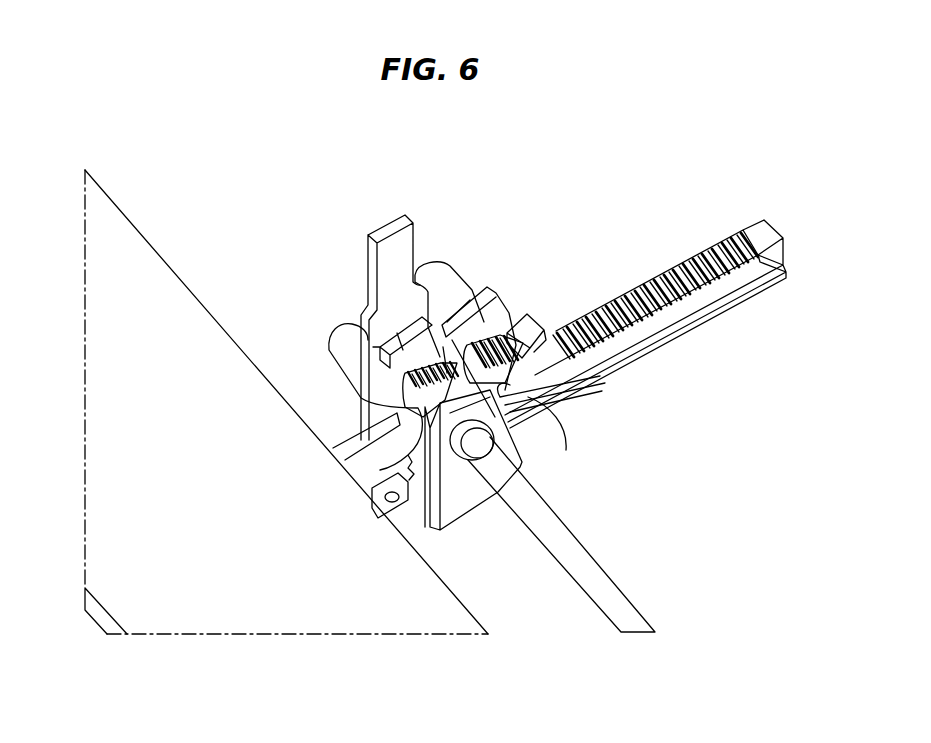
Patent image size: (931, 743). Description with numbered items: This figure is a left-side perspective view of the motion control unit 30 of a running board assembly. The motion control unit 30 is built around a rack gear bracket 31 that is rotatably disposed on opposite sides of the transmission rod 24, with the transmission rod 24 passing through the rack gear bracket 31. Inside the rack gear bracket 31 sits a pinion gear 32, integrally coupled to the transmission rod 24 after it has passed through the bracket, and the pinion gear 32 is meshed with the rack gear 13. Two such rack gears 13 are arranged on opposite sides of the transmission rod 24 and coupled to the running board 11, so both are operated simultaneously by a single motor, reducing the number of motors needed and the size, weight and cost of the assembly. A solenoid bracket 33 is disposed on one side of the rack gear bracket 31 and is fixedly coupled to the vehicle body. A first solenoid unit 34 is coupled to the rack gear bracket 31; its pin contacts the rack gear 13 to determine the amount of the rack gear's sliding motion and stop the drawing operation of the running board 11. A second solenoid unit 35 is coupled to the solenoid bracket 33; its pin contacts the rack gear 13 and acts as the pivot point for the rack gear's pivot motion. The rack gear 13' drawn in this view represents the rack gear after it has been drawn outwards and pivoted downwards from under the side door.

The running board 11 is at (356, 607).
The rack gear 13 is at (645, 281).
The rack gear 13' is at (552, 288).
The transmission rod 24 is at (603, 582).
The motion control unit 30 is at (362, 273).
The rack gear bracket 31 is at (484, 300).
The pinion gear 32 is at (503, 410).
The solenoid bracket 33 is at (395, 245).
The first solenoid unit 34 is at (444, 266).
The second solenoid unit 35 is at (342, 347).